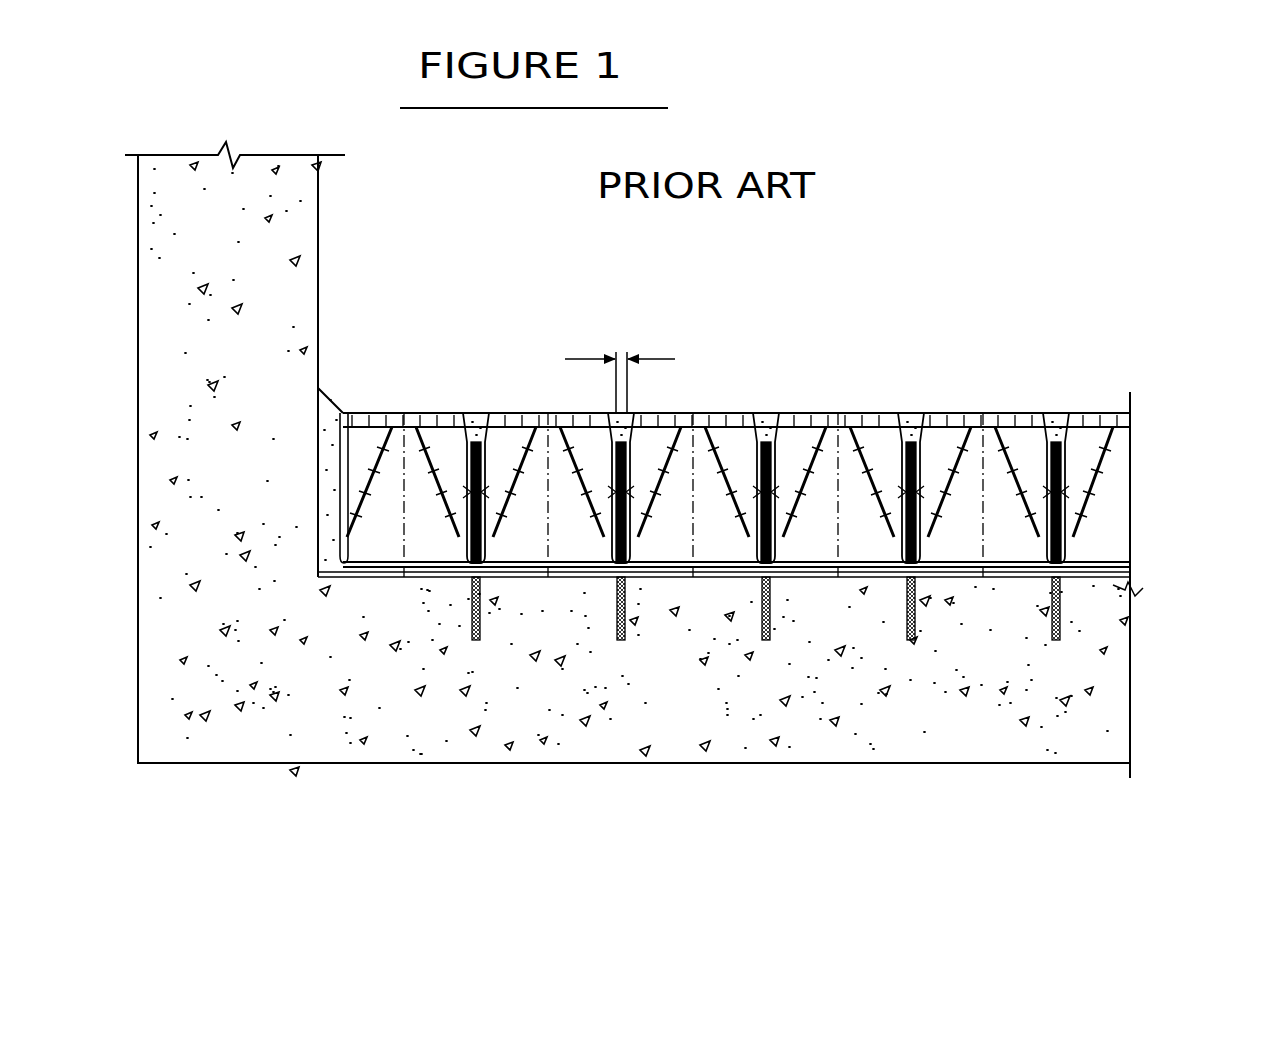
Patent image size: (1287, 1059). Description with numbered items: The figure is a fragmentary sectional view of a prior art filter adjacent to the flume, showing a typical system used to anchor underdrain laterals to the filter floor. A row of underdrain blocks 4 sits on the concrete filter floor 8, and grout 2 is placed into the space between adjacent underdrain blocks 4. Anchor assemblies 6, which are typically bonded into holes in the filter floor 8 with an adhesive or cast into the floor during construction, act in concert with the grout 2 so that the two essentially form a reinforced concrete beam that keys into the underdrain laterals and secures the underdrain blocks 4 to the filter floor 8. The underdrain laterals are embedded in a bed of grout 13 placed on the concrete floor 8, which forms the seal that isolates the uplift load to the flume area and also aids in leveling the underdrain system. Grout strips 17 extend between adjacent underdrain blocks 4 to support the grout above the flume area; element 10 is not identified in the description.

The grout 2 is at (913, 411).
The underdrain block 4 is at (420, 409).
The anchor assembly 6 is at (1078, 417).
The filter floor 8 is at (540, 574).
The diagonal brace 10 is at (1075, 481).
The bed of grout 13 is at (372, 572).
The grout strip 17 is at (1079, 556).